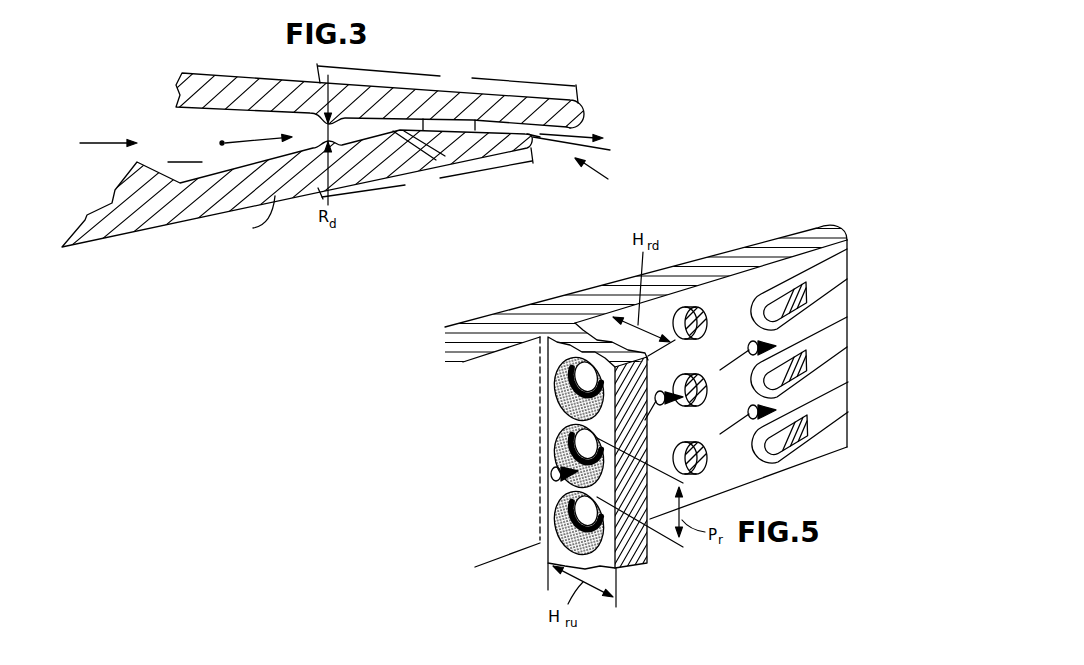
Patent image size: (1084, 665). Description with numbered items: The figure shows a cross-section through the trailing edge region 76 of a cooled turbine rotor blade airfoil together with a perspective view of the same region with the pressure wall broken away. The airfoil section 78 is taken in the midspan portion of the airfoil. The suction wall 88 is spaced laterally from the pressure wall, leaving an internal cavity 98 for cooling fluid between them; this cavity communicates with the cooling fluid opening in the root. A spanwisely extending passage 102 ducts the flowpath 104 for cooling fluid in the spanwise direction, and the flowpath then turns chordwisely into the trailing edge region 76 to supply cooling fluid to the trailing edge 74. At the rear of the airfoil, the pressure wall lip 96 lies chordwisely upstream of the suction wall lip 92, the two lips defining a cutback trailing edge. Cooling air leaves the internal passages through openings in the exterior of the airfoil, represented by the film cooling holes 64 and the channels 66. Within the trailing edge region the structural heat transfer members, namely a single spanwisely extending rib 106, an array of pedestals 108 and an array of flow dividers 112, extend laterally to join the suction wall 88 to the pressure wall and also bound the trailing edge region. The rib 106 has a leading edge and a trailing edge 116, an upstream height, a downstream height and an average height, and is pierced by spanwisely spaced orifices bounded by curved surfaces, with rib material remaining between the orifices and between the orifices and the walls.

In FIG. 3, the suction wall 88 is at (234, 74).
In FIG. 3, the airfoil section 78 is at (177, 216).
In FIG. 3, the spanwisely extending passage 102 is at (185, 152).
In FIG. 3, the internal cavity 98 is at (92, 145).
In FIG. 3, the flowpath 104 is at (254, 138).
In FIG. 5, the flowpath 104 is at (551, 475).
In FIG. 3, the trailing edge region 76 is at (447, 131).
In FIG. 3, the film cooling holes 64 is at (434, 157).
In FIG. 3, the suction wall lip 92 is at (581, 125).
In FIG. 3, the channels 66 is at (547, 140).
In FIG. 5, the channels 66 is at (822, 380).
In FIG. 3, the pressure wall lip 96 is at (538, 138).
In FIG. 3, the trailing edge 74 is at (604, 176).
In FIG. 5, the rib 106 is at (593, 348).
In FIG. 5, the array of pedestals 108 is at (685, 307).
In FIG. 5, the array of flow dividers 112 is at (797, 440).
In FIG. 5, the trailing edge of the rib 116 is at (632, 464).